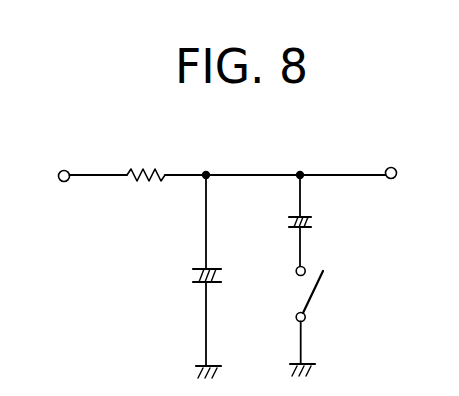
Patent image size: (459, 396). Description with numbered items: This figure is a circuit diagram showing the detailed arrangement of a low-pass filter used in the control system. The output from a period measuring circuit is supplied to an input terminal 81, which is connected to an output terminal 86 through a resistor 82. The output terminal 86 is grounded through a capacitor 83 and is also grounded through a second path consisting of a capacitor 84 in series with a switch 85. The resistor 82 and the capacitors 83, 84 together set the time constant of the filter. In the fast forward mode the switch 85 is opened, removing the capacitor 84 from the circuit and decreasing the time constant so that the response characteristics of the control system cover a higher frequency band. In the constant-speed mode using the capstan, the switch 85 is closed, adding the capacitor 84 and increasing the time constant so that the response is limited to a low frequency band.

The input terminal 81 is at (64, 170).
The resistor 82 is at (147, 169).
The capacitor 83 is at (193, 278).
The capacitor 84 is at (314, 220).
The switch 85 is at (315, 291).
The output terminal 86 is at (391, 167).